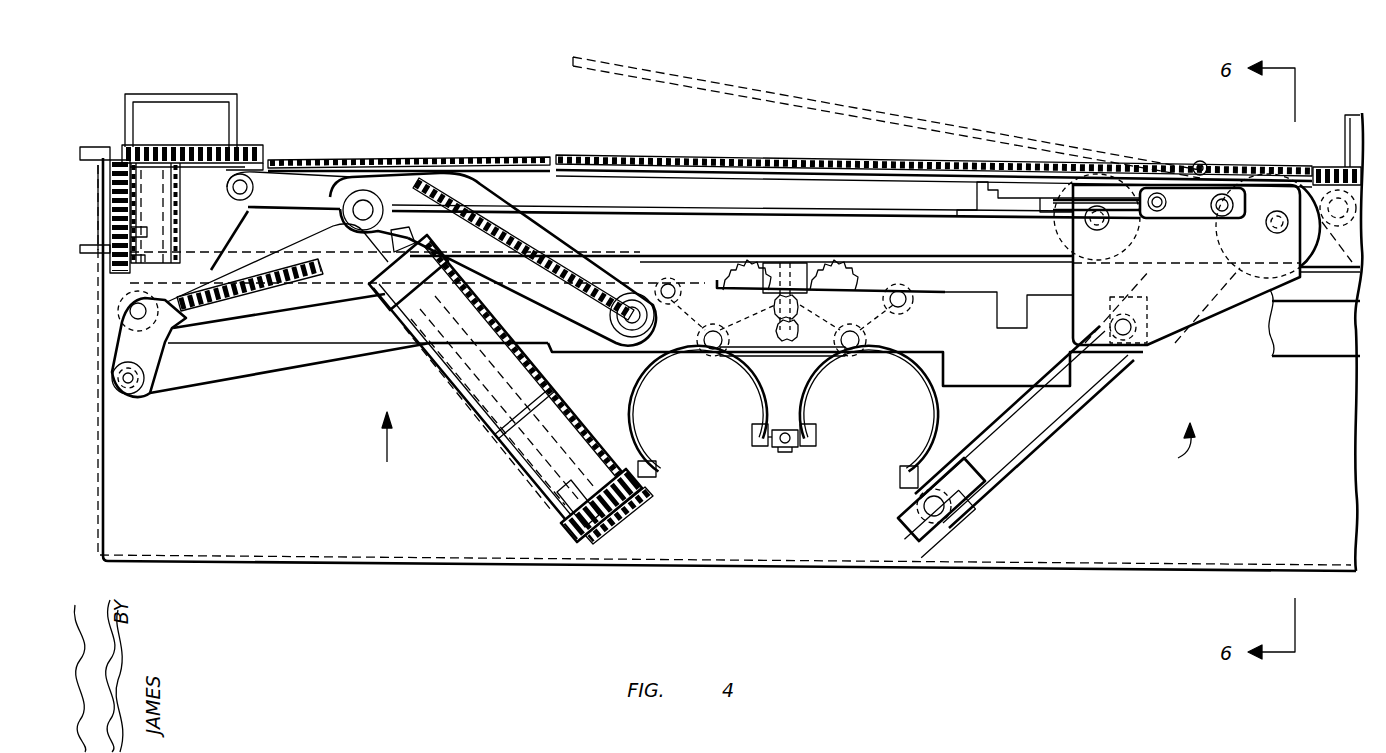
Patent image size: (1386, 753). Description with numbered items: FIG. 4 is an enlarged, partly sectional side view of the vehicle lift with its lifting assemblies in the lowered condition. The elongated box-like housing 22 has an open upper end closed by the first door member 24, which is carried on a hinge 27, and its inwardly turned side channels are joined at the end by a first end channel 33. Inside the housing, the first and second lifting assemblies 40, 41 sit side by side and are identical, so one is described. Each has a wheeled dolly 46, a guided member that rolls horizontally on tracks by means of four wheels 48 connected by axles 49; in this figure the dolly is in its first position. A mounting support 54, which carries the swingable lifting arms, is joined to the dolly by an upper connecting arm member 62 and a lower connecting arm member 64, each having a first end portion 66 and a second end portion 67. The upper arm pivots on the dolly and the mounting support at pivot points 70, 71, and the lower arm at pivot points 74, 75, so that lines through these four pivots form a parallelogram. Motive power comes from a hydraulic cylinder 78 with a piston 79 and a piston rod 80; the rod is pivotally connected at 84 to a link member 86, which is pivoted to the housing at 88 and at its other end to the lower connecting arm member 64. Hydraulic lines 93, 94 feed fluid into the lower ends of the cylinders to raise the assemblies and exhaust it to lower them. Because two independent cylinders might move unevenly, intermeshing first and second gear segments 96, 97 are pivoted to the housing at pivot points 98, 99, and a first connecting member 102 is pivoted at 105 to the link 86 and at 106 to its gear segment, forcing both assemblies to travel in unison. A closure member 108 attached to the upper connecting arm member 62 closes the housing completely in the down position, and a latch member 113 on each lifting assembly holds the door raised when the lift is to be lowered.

The housing 22 is at (100, 483).
The first door member 24 is at (655, 157).
The hinge 27 is at (1201, 162).
The first end channel 33 is at (92, 257).
The first lifting assembly 40 is at (394, 448).
The second lifting assembly 41 is at (1046, 442).
The wheeled dolly 46 is at (1200, 300).
The wheel 48 is at (1060, 233).
The axle 49 is at (1108, 224).
The mounting support 54 is at (252, 145).
The upper connecting arm member 62 is at (760, 190).
The lower connecting arm member 64 is at (590, 354).
The first end portion 66 is at (1183, 190).
The second end portion 67 is at (310, 180).
The pivot point 70 is at (1224, 198).
The pivot point 71 is at (250, 182).
The pivot point 74 is at (1132, 342).
The pivot point 75 is at (106, 330).
The hydraulic cylinder 78 is at (494, 424).
The piston 79 is at (582, 494).
The piston rod 80 is at (545, 435).
The pivot connection 84 is at (355, 208).
The link member 86 is at (400, 185).
The pivot connection 88 is at (128, 312).
The hydraulic line 93 is at (643, 406).
The hydraulic line 94 is at (930, 406).
The first gear segment 96 is at (725, 270).
The second gear segment 97 is at (840, 270).
The pivot point 98 is at (730, 358).
The pivot point 99 is at (838, 357).
The first connecting member 102 is at (290, 352).
The pivot point 105 is at (133, 387).
The pivot point 106 is at (660, 283).
The closure member 108 is at (386, 150).
The latch member 113 is at (990, 198).